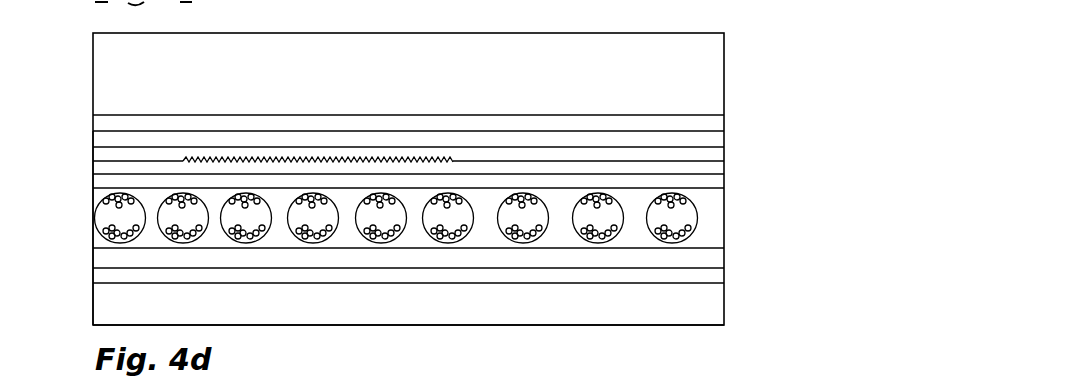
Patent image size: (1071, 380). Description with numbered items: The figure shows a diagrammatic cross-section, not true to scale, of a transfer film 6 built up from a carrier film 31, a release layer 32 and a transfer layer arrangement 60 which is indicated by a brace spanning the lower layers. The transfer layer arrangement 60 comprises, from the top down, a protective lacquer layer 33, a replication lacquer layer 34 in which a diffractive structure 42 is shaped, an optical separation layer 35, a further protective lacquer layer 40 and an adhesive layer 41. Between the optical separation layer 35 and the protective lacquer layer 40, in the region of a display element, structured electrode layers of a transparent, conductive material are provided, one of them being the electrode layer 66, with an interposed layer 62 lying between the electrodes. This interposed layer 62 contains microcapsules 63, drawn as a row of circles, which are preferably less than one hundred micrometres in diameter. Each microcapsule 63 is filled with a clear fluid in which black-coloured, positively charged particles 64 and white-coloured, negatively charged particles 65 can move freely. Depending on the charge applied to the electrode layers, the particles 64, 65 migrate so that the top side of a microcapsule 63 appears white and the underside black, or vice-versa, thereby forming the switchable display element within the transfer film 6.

The transfer film 6 is at (742, 46).
The carrier film 31 is at (700, 77).
The release layer 32 is at (713, 124).
The protective lacquer layer 33 is at (718, 139).
The replication lacquer layer 34 is at (718, 152).
The optical separation layer 35 is at (722, 166).
The diffractive structure 42 is at (307, 150).
The transfer layer arrangement 60 is at (83, 131).
The interposed layer 62 is at (715, 197).
The microcapsules 63 is at (688, 216).
The black-coloured, positively charged particles 64 is at (693, 206).
The white-coloured, negatively charged particles 65 is at (710, 256).
The structured electrode layer 66 is at (715, 265).
The protective lacquer layer 40 is at (715, 273).
The adhesive layer 41 is at (710, 312).